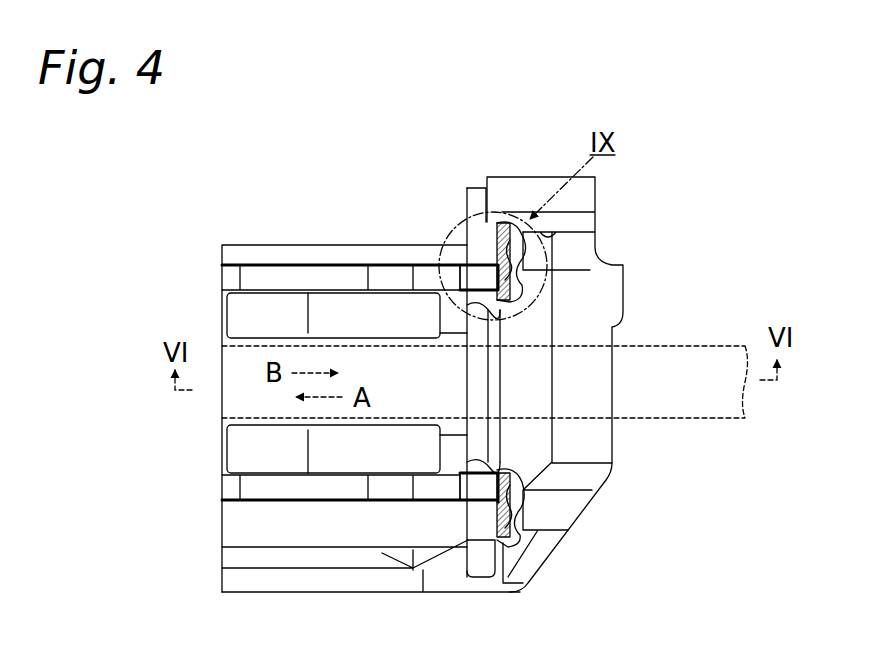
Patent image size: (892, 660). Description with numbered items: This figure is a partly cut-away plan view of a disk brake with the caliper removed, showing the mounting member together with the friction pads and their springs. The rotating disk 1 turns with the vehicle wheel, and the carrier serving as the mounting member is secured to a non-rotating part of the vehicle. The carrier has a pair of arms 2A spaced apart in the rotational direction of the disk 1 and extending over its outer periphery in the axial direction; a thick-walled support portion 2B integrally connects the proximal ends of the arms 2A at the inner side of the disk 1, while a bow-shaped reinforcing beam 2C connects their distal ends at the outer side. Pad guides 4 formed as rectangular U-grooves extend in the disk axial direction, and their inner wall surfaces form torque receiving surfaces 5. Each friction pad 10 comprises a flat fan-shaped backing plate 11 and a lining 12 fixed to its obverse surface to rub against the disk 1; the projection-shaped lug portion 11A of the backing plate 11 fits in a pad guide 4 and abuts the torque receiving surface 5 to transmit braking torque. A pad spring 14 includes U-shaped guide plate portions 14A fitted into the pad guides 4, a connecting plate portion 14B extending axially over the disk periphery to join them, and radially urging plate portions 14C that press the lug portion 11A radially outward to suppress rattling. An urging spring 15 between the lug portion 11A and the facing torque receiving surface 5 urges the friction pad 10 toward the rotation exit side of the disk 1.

The disk 1 is at (717, 346).
The arms 2A is at (575, 447).
The support portion 2B is at (243, 252).
The reinforcing beam 2C is at (310, 582).
The pad guides 4 is at (525, 302).
The torque receiving surfaces 5 is at (513, 237).
The friction pad 10 is at (322, 256).
The backing plate 11 is at (363, 275).
The lug portion 11A is at (480, 270).
The lining 12 is at (250, 322).
The pad spring 14 is at (500, 397).
The guide plate portions 14A is at (528, 272).
The connecting plate portion 14B is at (497, 343).
The radially urging plate portions 14C is at (478, 205).
The urging spring 15 is at (478, 272).